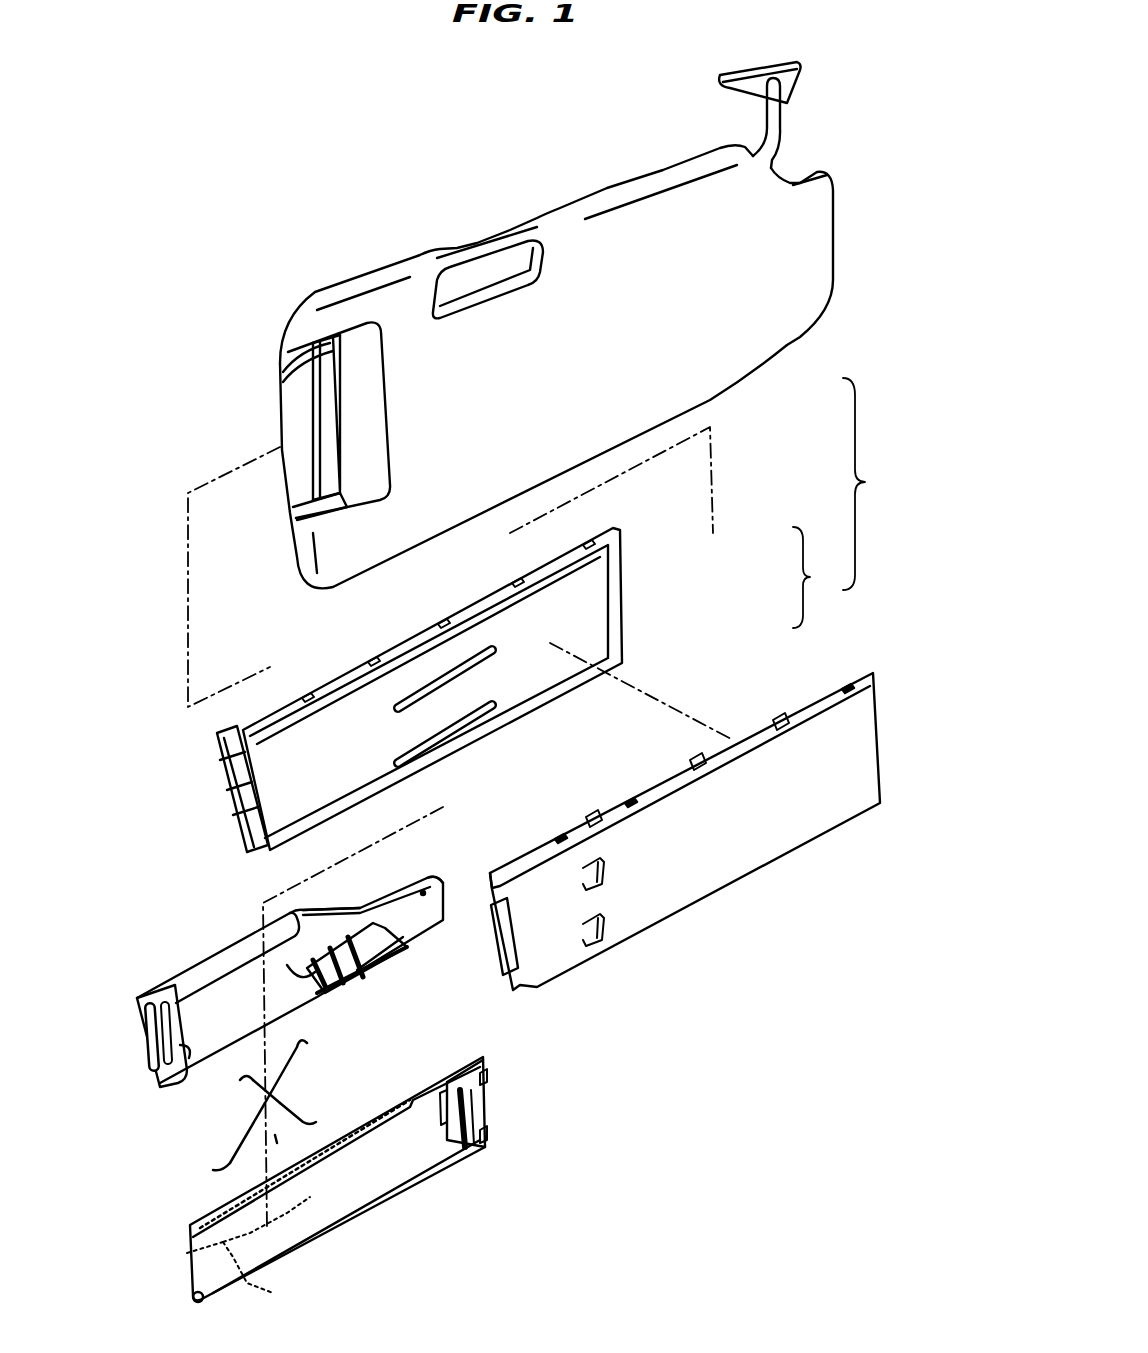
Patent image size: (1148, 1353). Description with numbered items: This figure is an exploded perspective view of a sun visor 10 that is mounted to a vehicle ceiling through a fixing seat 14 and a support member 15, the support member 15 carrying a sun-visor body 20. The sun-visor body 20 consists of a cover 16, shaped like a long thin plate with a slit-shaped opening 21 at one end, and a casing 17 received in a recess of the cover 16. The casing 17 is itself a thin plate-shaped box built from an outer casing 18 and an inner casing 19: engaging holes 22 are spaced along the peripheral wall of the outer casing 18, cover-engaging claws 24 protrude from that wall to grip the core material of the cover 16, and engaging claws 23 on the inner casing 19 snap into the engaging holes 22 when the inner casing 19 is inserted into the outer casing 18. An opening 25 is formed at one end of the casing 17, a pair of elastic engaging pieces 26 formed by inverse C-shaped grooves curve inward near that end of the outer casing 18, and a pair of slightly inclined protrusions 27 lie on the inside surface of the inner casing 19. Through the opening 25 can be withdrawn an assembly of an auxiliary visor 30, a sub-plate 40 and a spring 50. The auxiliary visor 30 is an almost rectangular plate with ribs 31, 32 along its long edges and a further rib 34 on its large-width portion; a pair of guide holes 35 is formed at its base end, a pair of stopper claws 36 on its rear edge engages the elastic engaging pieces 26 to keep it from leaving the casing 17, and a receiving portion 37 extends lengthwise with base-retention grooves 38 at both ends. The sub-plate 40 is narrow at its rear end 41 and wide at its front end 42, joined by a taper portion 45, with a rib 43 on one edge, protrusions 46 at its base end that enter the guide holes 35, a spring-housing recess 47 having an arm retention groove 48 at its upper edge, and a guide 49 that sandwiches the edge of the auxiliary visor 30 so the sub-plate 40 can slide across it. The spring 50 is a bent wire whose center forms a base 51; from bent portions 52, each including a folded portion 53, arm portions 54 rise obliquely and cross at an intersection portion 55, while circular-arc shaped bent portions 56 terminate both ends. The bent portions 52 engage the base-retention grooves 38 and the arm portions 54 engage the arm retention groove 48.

The sun visor 10 is at (313, 249).
The fixing seat 14 is at (720, 80).
The support member 15 is at (782, 133).
The cover 16 is at (785, 330).
The casing 17 is at (816, 577).
The outer casing 18 is at (685, 828).
The inner casing 19 is at (481, 690).
The sun-visor body 20 is at (871, 484).
The slit-shaped opening 21 is at (338, 410).
The engaging holes 22 is at (847, 683).
The engaging claws 23 is at (305, 693).
The cover-engaging claws 24 is at (787, 713).
The opening 25 is at (270, 757).
The elastic engaging pieces 26 is at (603, 885).
The protrusions 27 is at (474, 655).
The auxiliary visor 30 is at (411, 1209).
The rib 31 is at (370, 1213).
The rib 32 is at (391, 1100).
The rib 34 is at (453, 1068).
The guide holes 35 is at (467, 1103).
The stopper claws 36 is at (493, 1076).
The receiving portion 37 is at (258, 1290).
The base-retention grooves 38 is at (187, 1253).
The sub-plate 40 is at (197, 948).
The rear end 41 is at (413, 930).
The front end 42 is at (177, 1000).
The rib 43 is at (233, 953).
The taper portion 45 is at (327, 910).
The protrusions 46 is at (437, 912).
The spring-housing recess 47 is at (210, 1045).
The arm retention groove 48 is at (328, 988).
The guide 49 is at (157, 1068).
The spring 50 is at (231, 1135).
The base 51 is at (277, 1143).
The bent portions 52 is at (307, 1120).
The folded portion 53 is at (223, 1170).
The arm portions 54 is at (300, 1103).
The intersection portion 55 is at (288, 1088).
The circular-arc shaped bent portions 56 is at (295, 1022).